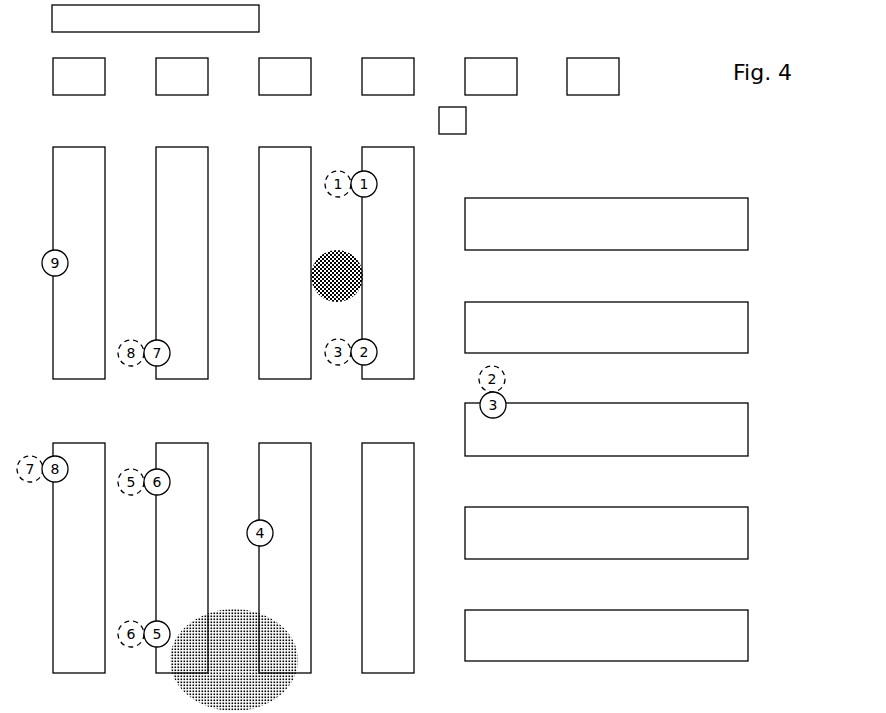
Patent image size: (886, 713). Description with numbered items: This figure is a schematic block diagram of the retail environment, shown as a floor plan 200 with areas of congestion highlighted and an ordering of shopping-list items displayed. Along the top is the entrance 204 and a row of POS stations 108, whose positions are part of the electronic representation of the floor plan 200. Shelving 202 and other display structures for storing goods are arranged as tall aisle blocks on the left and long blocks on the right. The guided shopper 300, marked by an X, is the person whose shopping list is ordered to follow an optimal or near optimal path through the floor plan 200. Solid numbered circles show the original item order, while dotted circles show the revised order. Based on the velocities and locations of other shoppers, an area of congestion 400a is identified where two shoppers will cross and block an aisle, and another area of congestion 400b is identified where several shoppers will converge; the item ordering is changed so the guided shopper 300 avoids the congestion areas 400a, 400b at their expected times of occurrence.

The POS station 108 is at (336, 76).
The entrance 204 is at (155, 18).
The floor plan 200 is at (684, 128).
The shelving 202 is at (413, 157).
The guided shopper 300 is at (466, 116).
The area of congestion 400a is at (337, 251).
The area of congestion 400b is at (294, 682).